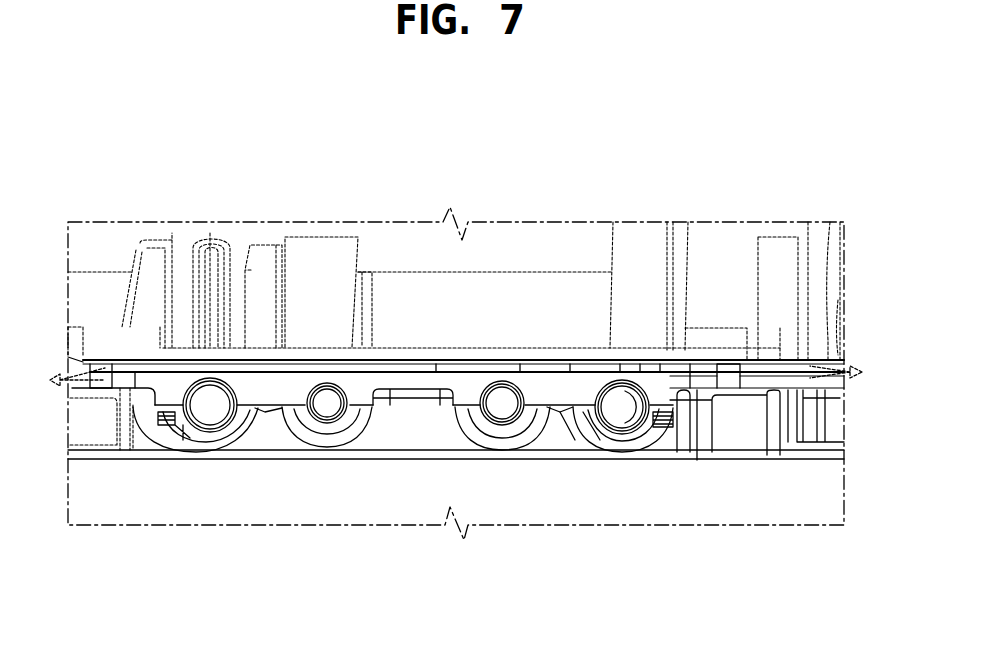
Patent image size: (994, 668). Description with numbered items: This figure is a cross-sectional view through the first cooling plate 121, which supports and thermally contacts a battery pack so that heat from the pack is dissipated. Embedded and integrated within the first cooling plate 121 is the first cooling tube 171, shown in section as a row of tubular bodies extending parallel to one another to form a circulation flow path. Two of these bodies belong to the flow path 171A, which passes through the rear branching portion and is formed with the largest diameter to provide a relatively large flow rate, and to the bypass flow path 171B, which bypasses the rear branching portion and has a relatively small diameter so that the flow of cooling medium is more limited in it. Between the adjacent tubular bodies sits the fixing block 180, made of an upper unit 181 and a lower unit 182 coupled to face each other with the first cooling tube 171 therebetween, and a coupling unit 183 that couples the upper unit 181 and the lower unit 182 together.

The first cooling plate 121 is at (730, 220).
The fixing block 180 is at (425, 378).
The upper unit 181 is at (535, 383).
The lower unit 182 is at (587, 417).
The coupling unit 183 is at (643, 449).
The first cooling tube 171 is at (345, 571).
The flow path 171A is at (212, 432).
The bypass flow path 171B is at (326, 423).